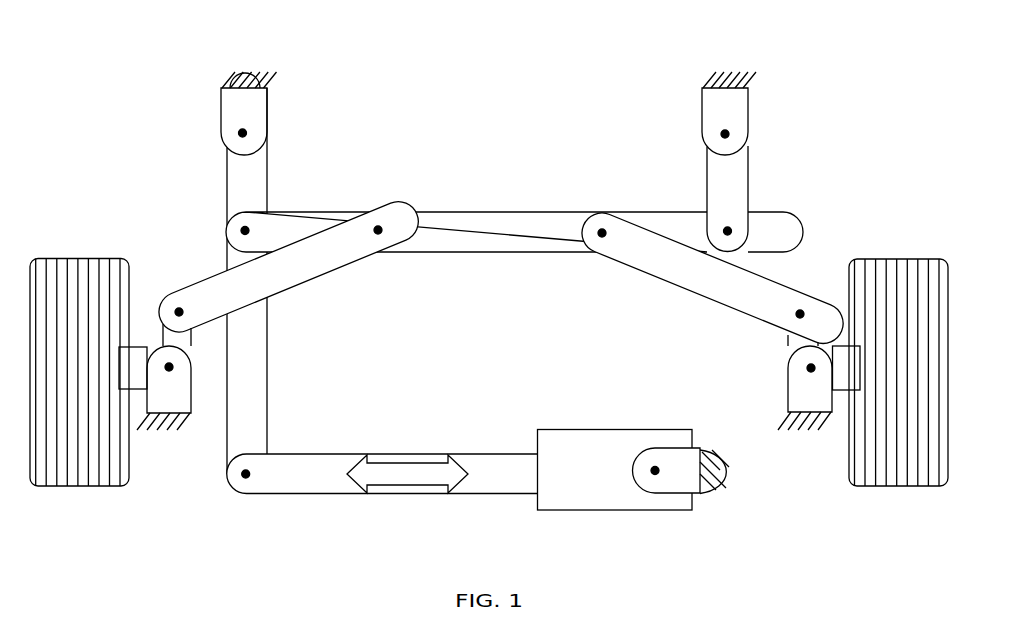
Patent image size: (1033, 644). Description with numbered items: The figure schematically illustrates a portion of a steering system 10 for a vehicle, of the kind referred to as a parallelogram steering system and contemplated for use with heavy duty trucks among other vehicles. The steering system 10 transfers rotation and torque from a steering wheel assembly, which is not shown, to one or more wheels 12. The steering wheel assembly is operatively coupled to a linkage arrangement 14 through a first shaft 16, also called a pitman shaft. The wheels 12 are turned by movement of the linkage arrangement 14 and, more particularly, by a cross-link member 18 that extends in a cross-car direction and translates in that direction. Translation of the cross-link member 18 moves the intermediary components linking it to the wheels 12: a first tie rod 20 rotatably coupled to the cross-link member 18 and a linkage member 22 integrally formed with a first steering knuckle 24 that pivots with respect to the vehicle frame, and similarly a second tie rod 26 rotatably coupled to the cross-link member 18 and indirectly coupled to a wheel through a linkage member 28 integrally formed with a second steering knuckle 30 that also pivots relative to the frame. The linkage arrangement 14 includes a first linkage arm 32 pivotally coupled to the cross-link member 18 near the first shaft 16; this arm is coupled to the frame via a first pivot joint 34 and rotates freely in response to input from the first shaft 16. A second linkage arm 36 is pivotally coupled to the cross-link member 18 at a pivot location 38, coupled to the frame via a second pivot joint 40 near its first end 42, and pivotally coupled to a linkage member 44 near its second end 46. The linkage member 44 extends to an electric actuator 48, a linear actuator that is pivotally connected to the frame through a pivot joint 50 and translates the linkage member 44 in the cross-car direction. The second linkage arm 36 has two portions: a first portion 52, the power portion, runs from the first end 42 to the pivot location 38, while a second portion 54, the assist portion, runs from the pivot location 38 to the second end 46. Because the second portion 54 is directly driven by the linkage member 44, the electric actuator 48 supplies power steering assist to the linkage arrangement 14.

The steering system 10 is at (85, 92).
The wheels 12 is at (52, 258).
The linkage arrangement 14 is at (300, 105).
The first shaft 16 is at (730, 133).
The cross-link member 18 is at (515, 222).
The first tie rod 20 is at (663, 272).
The linkage member 22 is at (793, 345).
The first steering knuckle 24 is at (845, 380).
The second tie rod 26 is at (297, 272).
The linkage member 28 is at (187, 342).
The second steering knuckle 30 is at (140, 357).
The first linkage arm 32 is at (737, 175).
The first pivot joint 34 is at (710, 105).
The second linkage arm 36 is at (239, 255).
The pivot location 38 is at (238, 227).
The second pivot joint 40 is at (225, 104).
The first end 42 is at (243, 80).
The linkage member 44 is at (478, 463).
The second end 46 is at (227, 478).
The electric actuator 48 is at (612, 498).
The pivot joint 50 is at (685, 482).
The first portion 52 is at (257, 180).
The second portion 54 is at (257, 392).